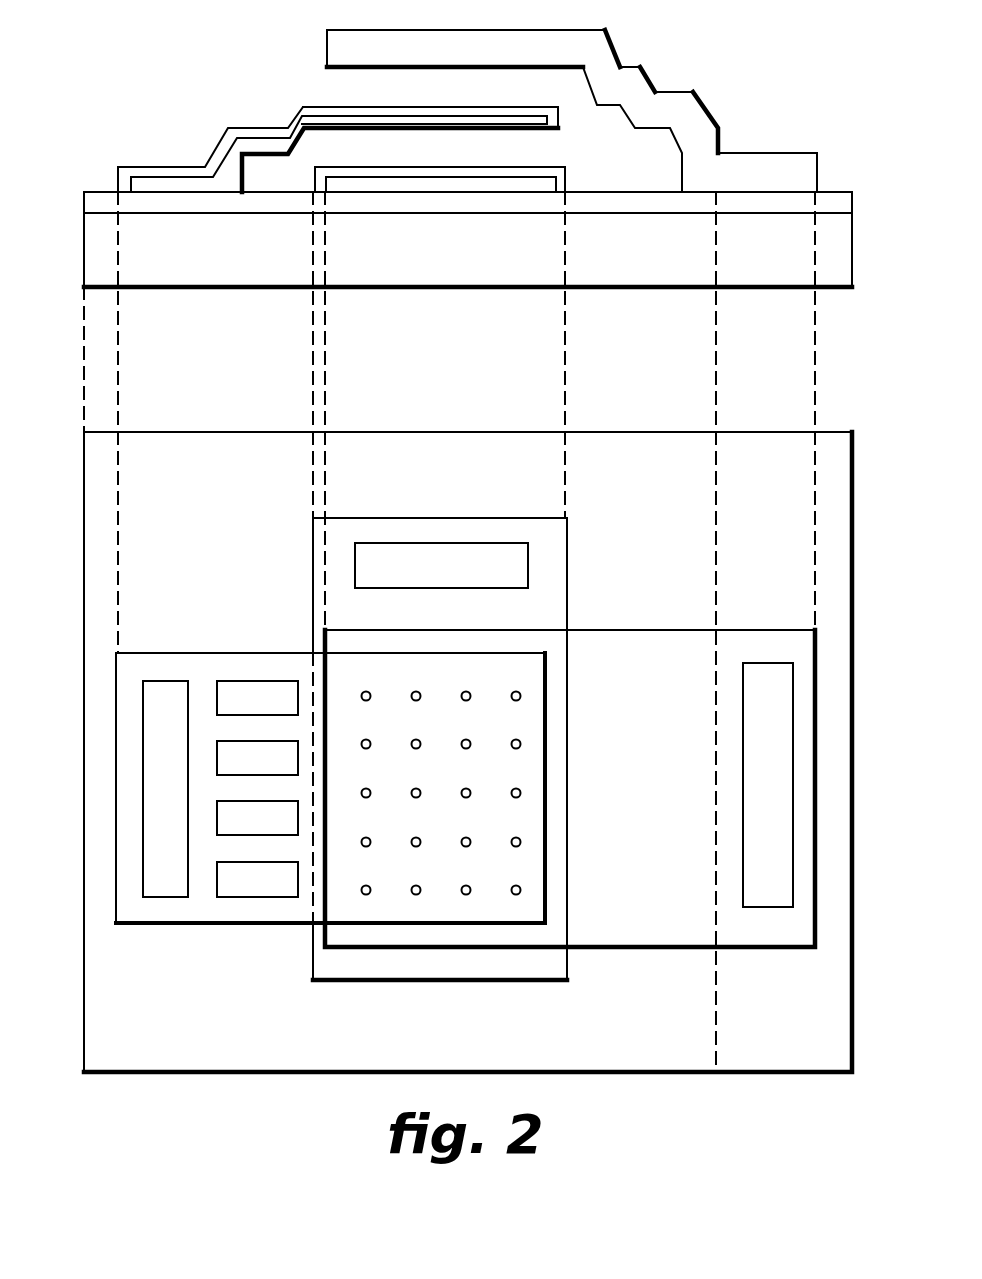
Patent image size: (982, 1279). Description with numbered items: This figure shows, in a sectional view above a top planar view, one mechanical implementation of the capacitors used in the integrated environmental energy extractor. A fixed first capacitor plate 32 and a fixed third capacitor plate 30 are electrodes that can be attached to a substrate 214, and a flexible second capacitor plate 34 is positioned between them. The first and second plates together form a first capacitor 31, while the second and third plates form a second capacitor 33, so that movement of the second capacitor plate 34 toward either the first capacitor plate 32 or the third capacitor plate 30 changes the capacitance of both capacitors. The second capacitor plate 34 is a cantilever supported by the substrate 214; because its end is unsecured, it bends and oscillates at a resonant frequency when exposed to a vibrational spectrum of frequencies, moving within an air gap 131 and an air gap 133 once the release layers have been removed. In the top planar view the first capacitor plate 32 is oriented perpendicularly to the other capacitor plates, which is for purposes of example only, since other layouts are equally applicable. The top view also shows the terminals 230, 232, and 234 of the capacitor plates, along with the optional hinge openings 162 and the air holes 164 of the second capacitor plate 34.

The third capacitor plate 30 is at (653, 110).
The first capacitor 31 is at (298, 97).
The first capacitor plate 32 is at (415, 192).
The second capacitor 33 is at (305, 173).
The second capacitor plate 34 is at (300, 122).
The air gap 131 is at (444, 99).
The air gap 133 is at (418, 160).
The hinge openings 162 is at (260, 852).
The air holes 164 is at (516, 842).
The substrate 214 is at (578, 233).
The terminal 230 is at (773, 690).
The terminal 232 is at (482, 557).
The terminal 234 is at (168, 698).